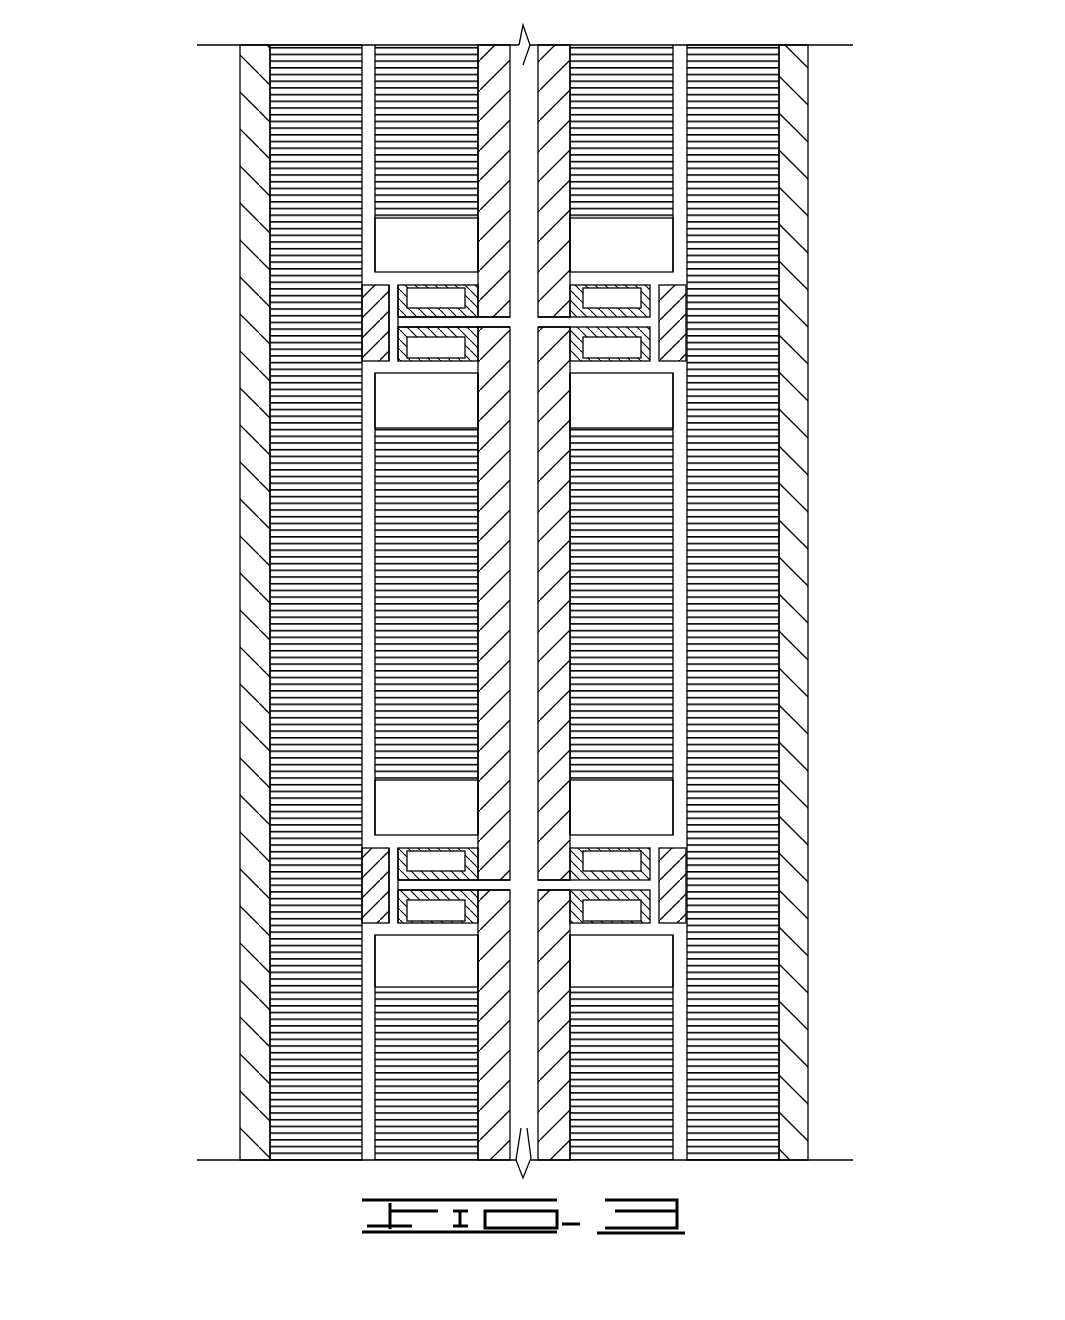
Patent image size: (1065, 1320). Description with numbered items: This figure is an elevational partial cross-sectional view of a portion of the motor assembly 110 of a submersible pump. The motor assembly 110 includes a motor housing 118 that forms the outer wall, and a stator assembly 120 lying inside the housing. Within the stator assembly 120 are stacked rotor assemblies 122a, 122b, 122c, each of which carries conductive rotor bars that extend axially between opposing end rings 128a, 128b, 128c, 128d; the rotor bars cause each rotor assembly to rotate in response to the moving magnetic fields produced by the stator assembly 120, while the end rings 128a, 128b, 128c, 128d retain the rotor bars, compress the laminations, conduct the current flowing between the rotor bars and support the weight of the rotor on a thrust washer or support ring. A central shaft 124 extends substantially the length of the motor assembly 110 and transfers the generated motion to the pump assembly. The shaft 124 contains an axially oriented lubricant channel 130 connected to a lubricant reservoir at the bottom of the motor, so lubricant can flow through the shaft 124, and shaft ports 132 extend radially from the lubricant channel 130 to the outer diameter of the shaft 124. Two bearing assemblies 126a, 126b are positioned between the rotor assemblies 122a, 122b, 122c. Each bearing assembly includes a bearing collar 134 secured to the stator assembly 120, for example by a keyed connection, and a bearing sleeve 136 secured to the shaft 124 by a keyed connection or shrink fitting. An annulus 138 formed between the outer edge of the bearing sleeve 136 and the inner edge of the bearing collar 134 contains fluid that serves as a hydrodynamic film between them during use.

The motor assembly 110 is at (205, 309).
The motor housing 118 is at (798, 607).
The stator assembly 120 is at (745, 520).
The rotor assembly 122a is at (640, 100).
The rotor assembly 122b is at (645, 718).
The rotor assembly 122c is at (635, 1090).
The shaft 124 is at (490, 1048).
The bearing assembly 126a is at (690, 318).
The bearing assembly 126b is at (690, 881).
The end ring 128a is at (655, 245).
The end ring 128b is at (640, 405).
The end ring 128c is at (655, 810).
The end ring 128d is at (655, 975).
The lubricant channel 130 is at (523, 1115).
The shaft port 132 is at (497, 312).
The bearing collar 134 is at (375, 343).
The bearing sleeve 136 is at (438, 308).
The annulus 138 is at (393, 353).